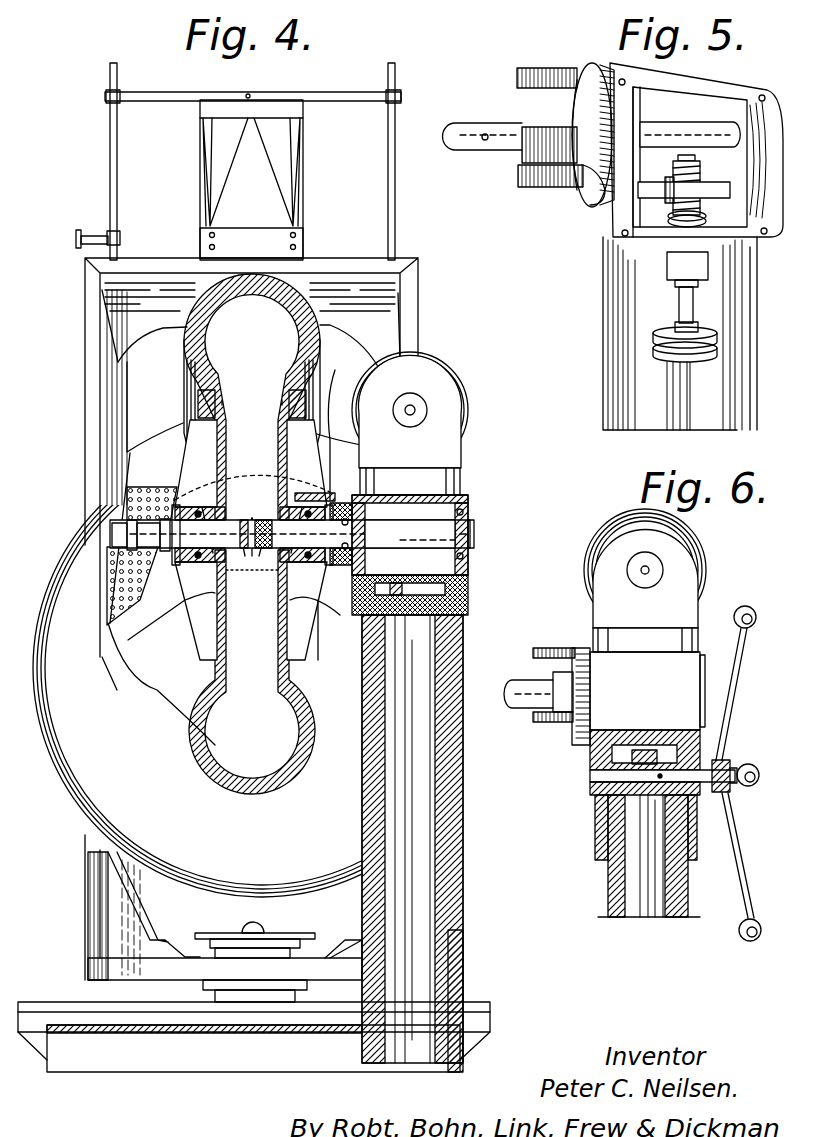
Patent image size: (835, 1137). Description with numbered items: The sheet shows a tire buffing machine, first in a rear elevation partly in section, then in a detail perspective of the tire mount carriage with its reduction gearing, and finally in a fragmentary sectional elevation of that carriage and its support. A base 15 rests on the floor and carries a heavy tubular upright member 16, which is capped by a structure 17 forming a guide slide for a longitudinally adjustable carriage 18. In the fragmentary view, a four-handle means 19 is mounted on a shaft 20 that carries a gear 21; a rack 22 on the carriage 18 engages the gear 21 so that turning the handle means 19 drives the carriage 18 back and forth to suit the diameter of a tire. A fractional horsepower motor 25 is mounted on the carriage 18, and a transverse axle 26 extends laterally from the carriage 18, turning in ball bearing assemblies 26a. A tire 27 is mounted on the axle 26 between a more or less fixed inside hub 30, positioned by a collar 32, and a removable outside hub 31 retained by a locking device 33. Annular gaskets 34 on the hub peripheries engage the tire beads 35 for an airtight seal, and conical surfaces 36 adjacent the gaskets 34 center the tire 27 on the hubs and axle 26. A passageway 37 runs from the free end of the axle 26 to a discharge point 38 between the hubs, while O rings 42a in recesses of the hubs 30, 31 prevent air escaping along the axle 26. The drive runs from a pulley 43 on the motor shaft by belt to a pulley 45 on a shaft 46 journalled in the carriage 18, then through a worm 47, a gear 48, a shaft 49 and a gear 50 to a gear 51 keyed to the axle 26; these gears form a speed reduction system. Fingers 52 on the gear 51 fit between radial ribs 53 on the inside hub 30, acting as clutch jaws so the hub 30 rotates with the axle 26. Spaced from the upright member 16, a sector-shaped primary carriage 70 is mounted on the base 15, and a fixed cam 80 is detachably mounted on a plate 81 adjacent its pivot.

In FIG. 4, the base 15 is at (45, 1060).
In FIG. 4, the upright member 16 is at (464, 840).
In FIG. 6, the upright member 16 is at (608, 878).
In FIG. 4, the structure 17 is at (468, 594).
In FIG. 6, the structure 17 is at (596, 815).
In FIG. 4, the carriage 18 is at (470, 565).
In FIG. 5, the carriage 18 is at (603, 333).
In FIG. 6, the carriage 18 is at (700, 703).
In FIG. 6, the four-handle means 19 is at (735, 835).
In FIG. 6, the shaft 20 is at (590, 776).
In FIG. 6, the gear 21 is at (651, 856).
In FIG. 6, the rack 22 is at (645, 745).
In FIG. 4, the motor 25 is at (420, 358).
In FIG. 6, the motor 25 is at (625, 525).
In FIG. 4, the axle 26 is at (150, 510).
In FIG. 5, the axle 26 is at (478, 123).
In FIG. 6, the axle 26 is at (520, 712).
In FIG. 4, the ball bearing assemblies 26a is at (432, 512).
In FIG. 4, the tire 27 is at (251, 619).
In FIG. 4, the inside hub 30 is at (318, 620).
In FIG. 4, the outside hub 31 is at (190, 605).
In FIG. 4, the collar 32 is at (328, 570).
In FIG. 5, the collar 32 is at (565, 128).
In FIG. 6, the collar 32 is at (556, 680).
In FIG. 4, the locking device 33 is at (185, 565).
In FIG. 4, the annular gaskets 34 is at (228, 372).
In FIG. 4, the tire beads 35 is at (280, 400).
In FIG. 4, the conical surfaces 36 is at (284, 410).
In FIG. 4, the passageway 37 is at (243, 560).
In FIG. 4, the discharge point 38 is at (244, 500).
In FIG. 5, the discharge point 38 is at (484, 142).
In FIG. 4, the O rings 42a is at (253, 540).
In FIG. 4, the pulley 43 is at (430, 403).
In FIG. 6, the pulley 43 is at (662, 570).
In FIG. 5, the pulley 45 is at (684, 358).
In FIG. 5, the shaft 46 is at (678, 295).
In FIG. 5, the worm 47 is at (668, 200).
In FIG. 5, the gear 48 is at (673, 178).
In FIG. 5, the shaft 49 is at (665, 192).
In FIG. 5, the gear 50 is at (590, 205).
In FIG. 4, the gear 51 is at (345, 500).
In FIG. 5, the gear 51 is at (592, 66).
In FIG. 6, the gear 51 is at (582, 648).
In FIG. 4, the fingers 52 is at (320, 492).
In FIG. 5, the fingers 52 is at (545, 68).
In FIG. 6, the fingers 52 is at (542, 648).
In FIG. 4, the radial ribs 53 is at (328, 670).
In FIG. 4, the primary carriage 70 is at (88, 925).
In FIG. 4, the cam 80 is at (212, 930).
In FIG. 4, the plate 81 is at (310, 930).